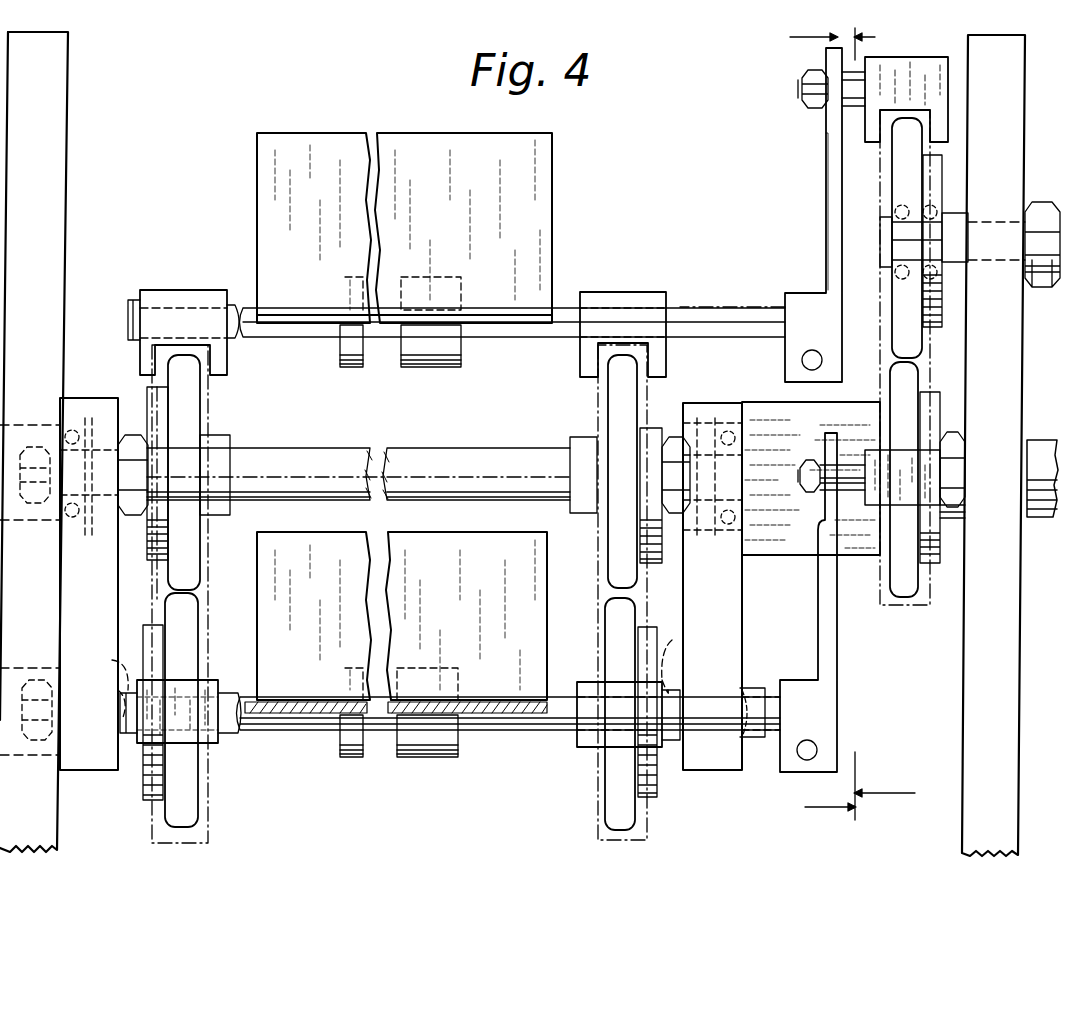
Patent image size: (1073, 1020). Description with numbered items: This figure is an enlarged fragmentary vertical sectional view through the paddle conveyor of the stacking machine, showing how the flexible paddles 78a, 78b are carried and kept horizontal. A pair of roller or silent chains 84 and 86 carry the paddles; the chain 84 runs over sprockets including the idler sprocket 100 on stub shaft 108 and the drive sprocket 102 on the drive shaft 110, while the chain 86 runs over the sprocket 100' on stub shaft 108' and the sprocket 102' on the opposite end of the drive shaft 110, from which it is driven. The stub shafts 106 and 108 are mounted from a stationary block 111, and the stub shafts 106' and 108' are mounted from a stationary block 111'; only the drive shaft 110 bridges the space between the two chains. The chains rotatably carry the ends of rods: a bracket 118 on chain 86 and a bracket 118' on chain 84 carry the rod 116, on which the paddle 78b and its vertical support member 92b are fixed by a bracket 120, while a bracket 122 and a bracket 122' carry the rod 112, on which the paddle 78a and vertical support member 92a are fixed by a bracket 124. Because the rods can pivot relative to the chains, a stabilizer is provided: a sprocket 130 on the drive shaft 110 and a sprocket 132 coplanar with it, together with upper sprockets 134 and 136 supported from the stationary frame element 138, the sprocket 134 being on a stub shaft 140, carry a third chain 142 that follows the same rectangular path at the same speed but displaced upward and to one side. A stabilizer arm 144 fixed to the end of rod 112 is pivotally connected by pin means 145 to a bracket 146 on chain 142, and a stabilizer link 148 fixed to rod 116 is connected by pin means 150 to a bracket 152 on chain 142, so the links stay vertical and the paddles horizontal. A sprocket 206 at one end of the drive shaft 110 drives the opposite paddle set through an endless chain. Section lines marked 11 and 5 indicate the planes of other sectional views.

The flexible paddle 78a is at (478, 700).
The flexible paddle 78b is at (478, 318).
The roller or silent chain 84 is at (206, 408).
The roller or silent chain 86 is at (600, 398).
The vertical support member 92a is at (470, 612).
The vertical support member 92b is at (552, 175).
The idler sprocket 100 is at (202, 710).
The sprocket 100' is at (580, 717).
The drive sprocket 102 is at (207, 493).
The sprocket 102' is at (591, 484).
The stub shaft 106 is at (97, 661).
The stub shaft 106' is at (697, 651).
The stub shaft 108 is at (95, 688).
The stub shaft 108' is at (697, 670).
The drive shaft 110 is at (422, 448).
The stationary block 111 is at (89, 584).
The stationary block 111' is at (712, 586).
The rod 112 is at (322, 730).
The rod 116 is at (506, 340).
The bracket 118 is at (629, 314).
The bracket 118' is at (183, 303).
The bracket 120 is at (352, 368).
The bracket 122 is at (671, 749).
The bracket 122' is at (158, 743).
The bracket 124 is at (356, 760).
The sprocket 130 is at (842, 359).
The sprocket 132 is at (896, 410).
The sprocket 134 is at (827, 357).
The sprocket 136 is at (906, 152).
The stationary frame element 138 is at (1032, 150).
The stub shaft 140 is at (880, 243).
The roller or silent chain 142 is at (925, 350).
The stabilizer arm 144 is at (838, 652).
The pin means 145 is at (800, 482).
The bracket 146 is at (925, 500).
The stabilizer link 148 is at (826, 176).
The pin means 150 is at (800, 92).
The bracket 152 is at (948, 66).
The sprocket 206 is at (1038, 445).
The section line 11- 11 is at (810, 428).
The section line 5- 5 is at (895, 421).